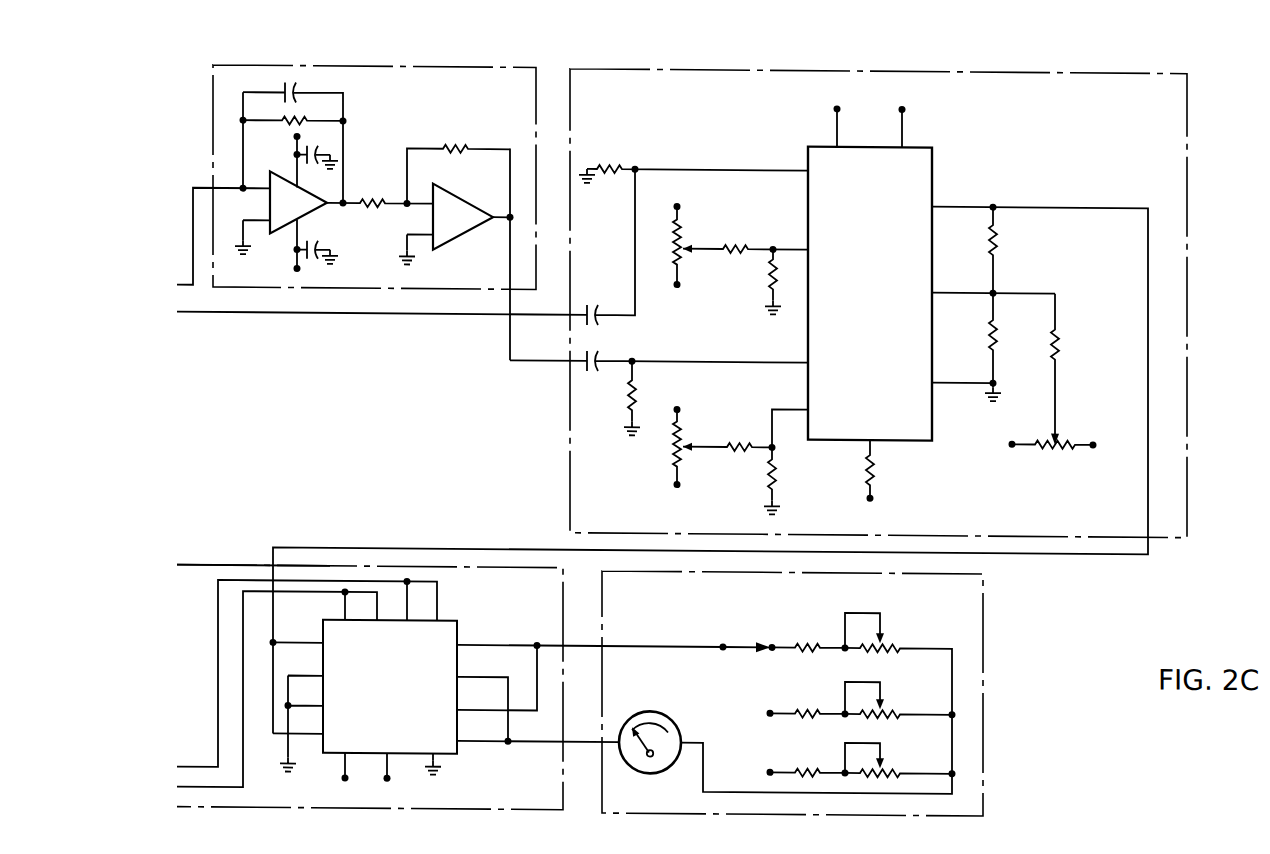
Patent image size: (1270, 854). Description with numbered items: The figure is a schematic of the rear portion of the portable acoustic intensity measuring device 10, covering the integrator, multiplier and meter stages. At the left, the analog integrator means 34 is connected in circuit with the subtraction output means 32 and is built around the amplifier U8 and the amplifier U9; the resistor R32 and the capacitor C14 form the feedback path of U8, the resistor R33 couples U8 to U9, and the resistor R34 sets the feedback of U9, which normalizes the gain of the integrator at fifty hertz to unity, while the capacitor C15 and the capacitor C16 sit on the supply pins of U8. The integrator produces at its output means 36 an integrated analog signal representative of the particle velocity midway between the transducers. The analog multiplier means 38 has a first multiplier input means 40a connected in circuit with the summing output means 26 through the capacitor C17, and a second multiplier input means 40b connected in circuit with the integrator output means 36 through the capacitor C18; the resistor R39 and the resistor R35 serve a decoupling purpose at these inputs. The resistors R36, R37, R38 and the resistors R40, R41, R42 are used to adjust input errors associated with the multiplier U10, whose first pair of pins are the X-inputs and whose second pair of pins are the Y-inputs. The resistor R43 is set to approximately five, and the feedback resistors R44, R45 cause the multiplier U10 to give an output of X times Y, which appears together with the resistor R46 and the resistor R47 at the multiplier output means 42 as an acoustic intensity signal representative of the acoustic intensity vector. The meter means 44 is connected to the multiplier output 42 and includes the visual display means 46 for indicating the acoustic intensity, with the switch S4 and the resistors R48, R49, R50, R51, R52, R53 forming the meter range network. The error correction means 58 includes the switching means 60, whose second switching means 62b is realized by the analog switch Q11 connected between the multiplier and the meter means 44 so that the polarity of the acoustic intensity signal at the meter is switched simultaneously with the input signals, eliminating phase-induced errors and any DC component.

The portable acoustic intensity measuring device 10 is at (565, 69).
The summing output means 26 is at (178, 319).
The subtraction output means 32 is at (192, 206).
The analog integrator means 34 is at (213, 71).
The integrator output means 36 is at (510, 278).
The analog multiplier means 38 is at (1242, 85).
The first multiplier input means 40a is at (556, 319).
The second multiplier input means 40b is at (532, 364).
The multiplier output means 42 is at (1075, 553).
The meter means 44 is at (983, 602).
The visual display means 46 is at (627, 772).
The error correction means 58 is at (228, 566).
The switching means 60 is at (457, 751).
The second switching means 62b is at (323, 752).
The resistor R32 is at (290, 118).
The resistor R33 is at (377, 198).
The resistor R34 is at (455, 148).
The resistor R35 is at (628, 395).
The resistor R36 is at (670, 250).
The resistor R37 is at (735, 239).
The resistor R38 is at (768, 271).
The resistor R39 is at (621, 160).
The resistor R40 is at (670, 447).
The resistor R41 is at (737, 439).
The resistor R42 is at (766, 477).
The resistor R43 is at (880, 470).
The feedback resistor R44 is at (999, 247).
The feedback resistor R45 is at (999, 335).
The resistor R46 is at (1061, 342).
The resistor R47 is at (1057, 448).
The resistor R48 is at (810, 639).
The resistor R49 is at (896, 638).
The resistor R50 is at (810, 706).
The resistor R51 is at (890, 705).
The resistor R52 is at (808, 765).
The resistor R53 is at (894, 765).
The capacitor C14 is at (292, 86).
The capacitor C15 is at (306, 150).
The capacitor C16 is at (318, 247).
The capacitor C17 is at (593, 300).
The capacitor C18 is at (597, 352).
The amplifier U8 is at (287, 204).
The amplifier U9 is at (456, 224).
The multiplier U10 is at (873, 269).
The analog switch Q11 is at (450, 693).
The switch S4 is at (742, 639).